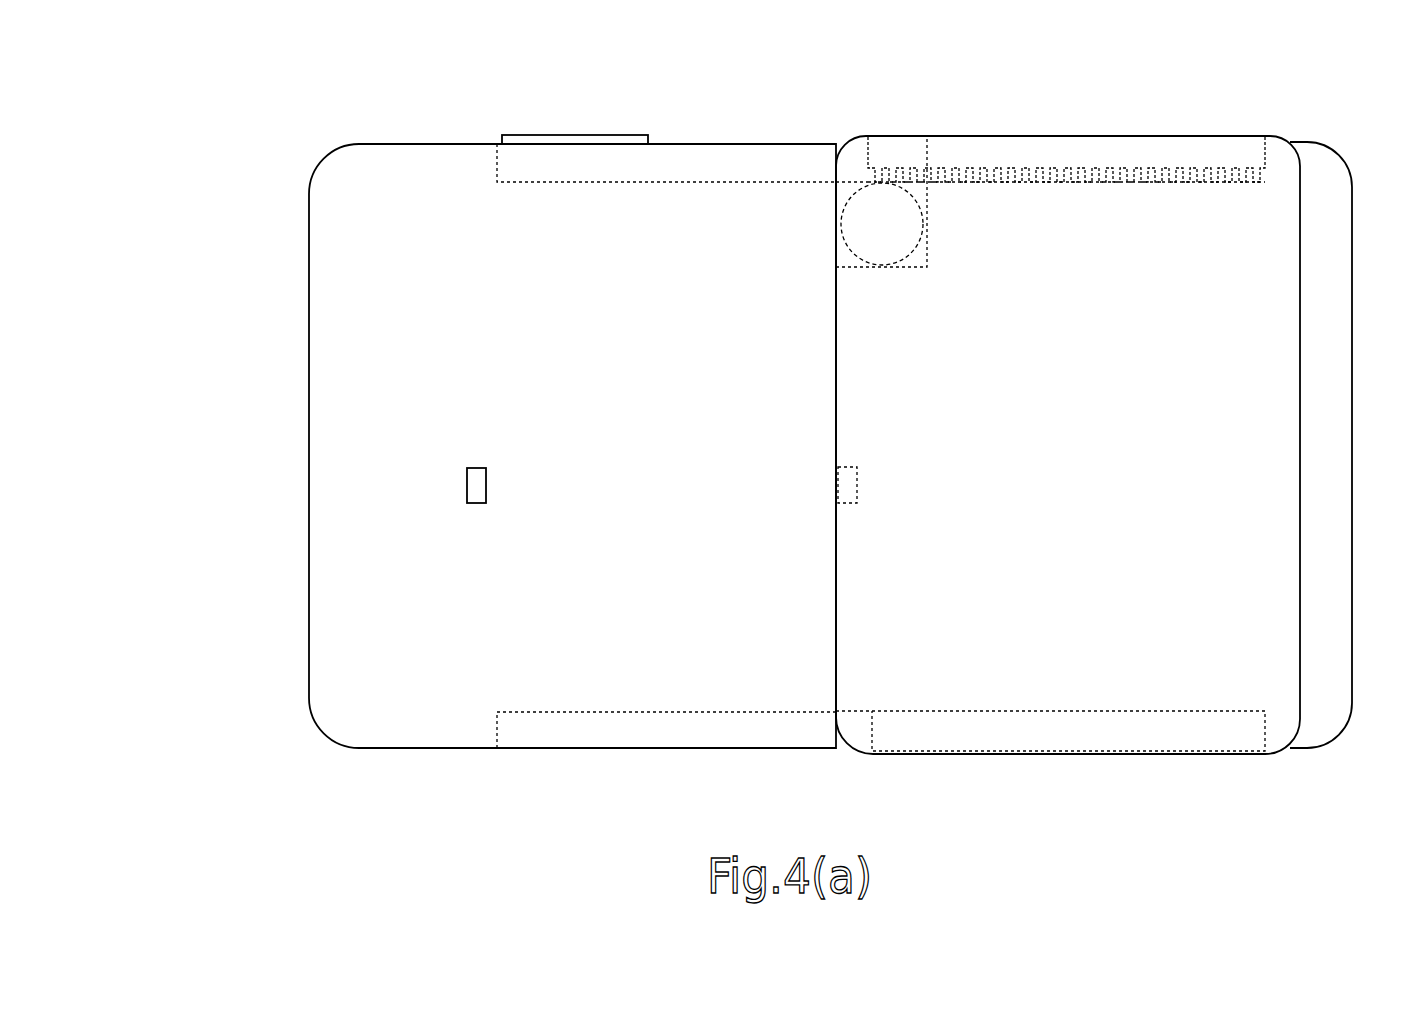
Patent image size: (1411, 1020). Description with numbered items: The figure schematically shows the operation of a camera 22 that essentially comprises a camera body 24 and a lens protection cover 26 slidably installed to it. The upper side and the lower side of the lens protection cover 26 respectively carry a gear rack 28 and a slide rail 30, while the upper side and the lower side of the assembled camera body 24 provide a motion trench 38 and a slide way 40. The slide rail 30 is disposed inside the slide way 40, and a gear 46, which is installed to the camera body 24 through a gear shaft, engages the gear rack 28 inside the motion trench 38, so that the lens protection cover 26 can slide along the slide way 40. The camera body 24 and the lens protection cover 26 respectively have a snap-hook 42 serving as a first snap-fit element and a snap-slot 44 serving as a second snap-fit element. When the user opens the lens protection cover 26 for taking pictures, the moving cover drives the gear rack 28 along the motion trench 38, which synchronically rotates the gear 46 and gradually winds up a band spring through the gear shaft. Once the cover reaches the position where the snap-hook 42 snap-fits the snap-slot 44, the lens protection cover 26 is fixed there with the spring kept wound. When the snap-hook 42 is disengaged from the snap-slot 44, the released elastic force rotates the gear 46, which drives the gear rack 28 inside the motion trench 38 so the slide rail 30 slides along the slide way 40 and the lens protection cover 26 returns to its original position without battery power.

The camera 22 is at (285, 198).
The camera body 24 is at (310, 623).
The lens protection cover 26 is at (1273, 225).
The gear rack 28 is at (1088, 170).
The slide rail 30 is at (1070, 733).
The motion trench 38 is at (723, 172).
The slide way 40 is at (710, 727).
The snap-hook 42 is at (476, 482).
The snap-slot 44 is at (848, 485).
The gear 46 is at (868, 210).